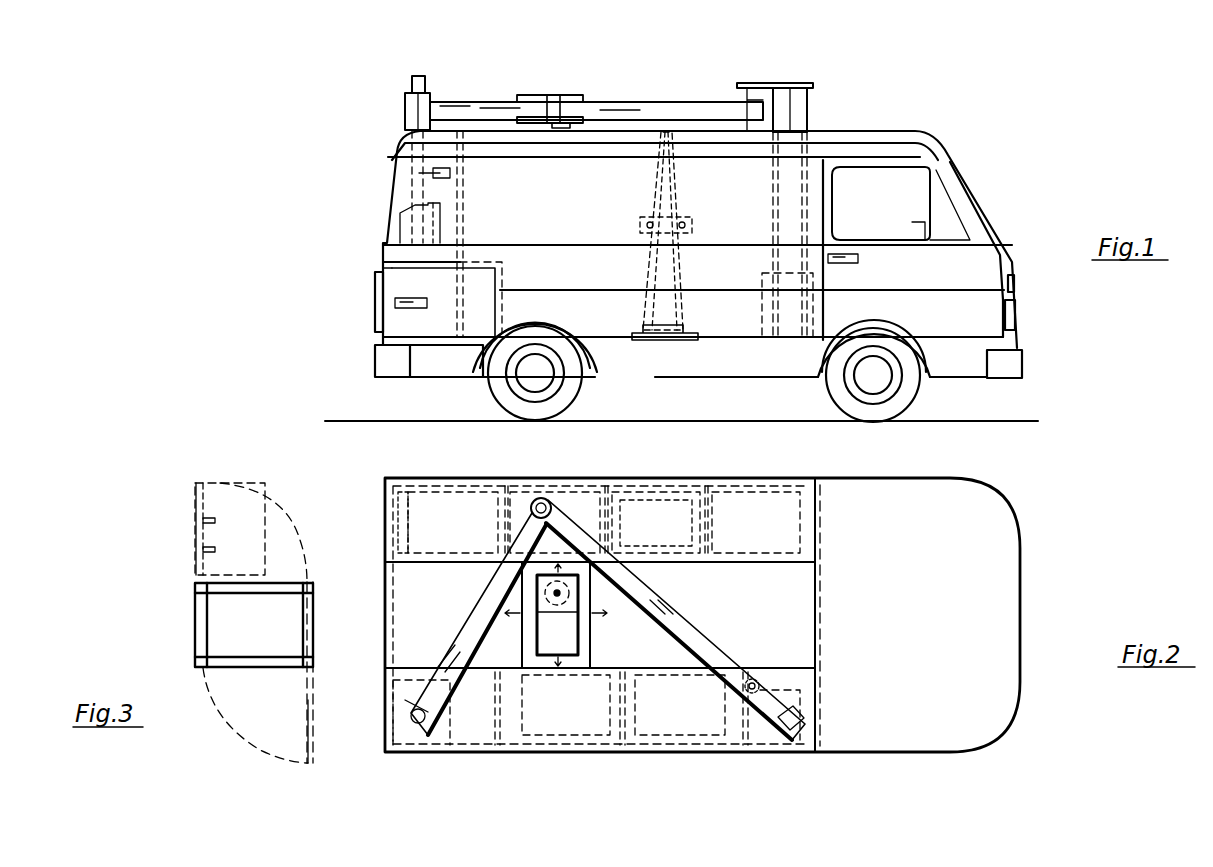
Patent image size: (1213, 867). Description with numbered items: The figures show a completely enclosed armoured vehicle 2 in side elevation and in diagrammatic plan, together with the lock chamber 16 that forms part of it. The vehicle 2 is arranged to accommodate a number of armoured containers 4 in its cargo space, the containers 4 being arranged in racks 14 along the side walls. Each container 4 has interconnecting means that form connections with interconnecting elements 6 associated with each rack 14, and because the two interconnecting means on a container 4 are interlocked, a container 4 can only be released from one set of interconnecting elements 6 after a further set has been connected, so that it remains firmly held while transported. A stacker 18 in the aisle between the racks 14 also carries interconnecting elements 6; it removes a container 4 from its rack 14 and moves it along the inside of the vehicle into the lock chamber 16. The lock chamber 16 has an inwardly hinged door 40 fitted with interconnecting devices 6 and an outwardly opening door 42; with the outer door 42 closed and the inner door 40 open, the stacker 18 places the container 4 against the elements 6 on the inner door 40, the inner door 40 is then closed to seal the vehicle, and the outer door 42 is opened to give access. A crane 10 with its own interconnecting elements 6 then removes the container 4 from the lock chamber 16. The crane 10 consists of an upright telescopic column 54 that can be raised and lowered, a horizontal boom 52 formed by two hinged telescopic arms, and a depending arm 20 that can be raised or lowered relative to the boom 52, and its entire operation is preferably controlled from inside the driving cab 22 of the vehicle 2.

In FIG. 1, the armoured vehicle 2 is at (1036, 192).
In FIG. 2, the armoured vehicle 2 is at (1030, 592).
In FIG. 2, the armoured container 4 is at (445, 510).
In FIG. 3, the armoured container 4 is at (226, 514).
In FIG. 3, the interconnecting elements 6 is at (212, 518).
In FIG. 1, the crane 10 is at (407, 115).
In FIG. 2, the rack 14 is at (645, 510).
In FIG. 1, the lock chamber 16 is at (357, 309).
In FIG. 3, the lock chamber 16 is at (290, 531).
In FIG. 1, the stacker 18 is at (665, 214).
In FIG. 2, the stacker 18 is at (588, 642).
In FIG. 1, the depending arm 20 is at (408, 226).
In FIG. 1, the driving cab 22 is at (893, 197).
In FIG. 3, the inwardly hinged door 40 is at (198, 537).
In FIG. 1, the outwardly opening door 42 is at (405, 325).
In FIG. 3, the outwardly opening door 42 is at (312, 748).
In FIG. 1, the horizontal boom 52 is at (602, 104).
In FIG. 2, the horizontal boom 52 is at (477, 625).
In FIG. 1, the upright telescopic column 54 is at (762, 307).